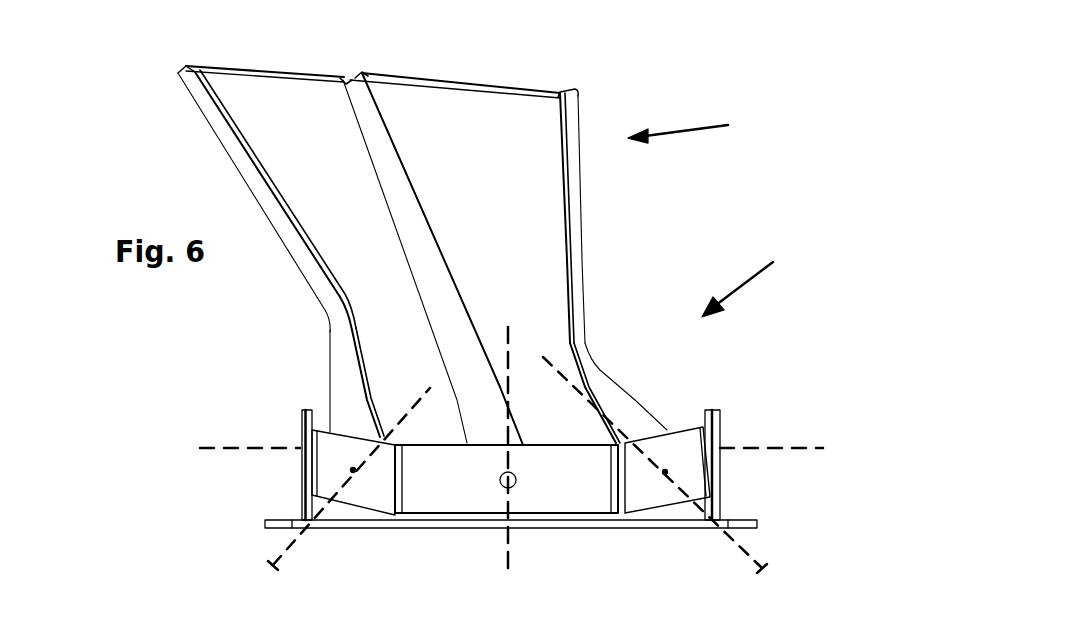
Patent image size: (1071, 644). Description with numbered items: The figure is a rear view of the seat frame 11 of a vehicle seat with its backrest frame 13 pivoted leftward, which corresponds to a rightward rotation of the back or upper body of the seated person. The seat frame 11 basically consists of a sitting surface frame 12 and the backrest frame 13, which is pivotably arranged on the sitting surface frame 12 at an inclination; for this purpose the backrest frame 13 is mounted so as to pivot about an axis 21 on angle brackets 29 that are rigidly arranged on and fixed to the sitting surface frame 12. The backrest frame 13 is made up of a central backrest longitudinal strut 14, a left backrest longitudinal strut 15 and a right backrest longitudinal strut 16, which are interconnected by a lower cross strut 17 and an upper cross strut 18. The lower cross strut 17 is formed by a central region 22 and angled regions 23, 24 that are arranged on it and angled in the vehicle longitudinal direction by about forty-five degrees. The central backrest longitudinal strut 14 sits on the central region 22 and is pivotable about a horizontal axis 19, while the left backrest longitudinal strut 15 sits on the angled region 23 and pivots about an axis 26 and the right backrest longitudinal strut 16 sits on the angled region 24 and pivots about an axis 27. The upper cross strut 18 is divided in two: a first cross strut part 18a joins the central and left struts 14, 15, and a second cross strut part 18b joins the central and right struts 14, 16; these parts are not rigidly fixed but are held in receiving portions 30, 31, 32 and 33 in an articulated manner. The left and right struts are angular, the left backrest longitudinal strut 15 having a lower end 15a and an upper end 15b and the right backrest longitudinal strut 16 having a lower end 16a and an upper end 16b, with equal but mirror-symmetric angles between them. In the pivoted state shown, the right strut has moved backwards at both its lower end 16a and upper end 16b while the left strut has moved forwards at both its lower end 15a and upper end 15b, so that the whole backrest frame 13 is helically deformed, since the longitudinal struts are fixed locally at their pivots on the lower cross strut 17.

The seat frame 11 is at (749, 283).
The sitting surface frame 12 is at (453, 525).
The backrest frame 13 is at (692, 126).
The central backrest longitudinal strut 14 is at (410, 210).
The left backrest longitudinal strut 15 is at (244, 253).
The lower end of left backrest longitudinal strut 15a is at (337, 363).
The upper end of left backrest longitudinal strut 15b is at (198, 103).
The right backrest longitudinal strut 16 is at (635, 268).
The lower end of right backrest longitudinal strut 16a is at (613, 393).
The upper end of right backrest longitudinal strut 16b is at (577, 204).
The lower cross strut 17 is at (561, 510).
The upper cross strut 18 is at (373, 61).
The first cross strut part 18a is at (257, 70).
The second cross strut part 18b is at (462, 82).
The horizontal axis 19 is at (508, 562).
The axis 21 is at (235, 448).
The central region of lower cross strut 22 is at (583, 505).
The angled region of lower cross strut 23 is at (375, 492).
The angled region of lower cross strut 24 is at (692, 468).
The axis 26 is at (272, 563).
The axis 27 is at (762, 565).
The angle brackets 29 is at (305, 423).
The receiving portion 30 is at (188, 66).
The receiving portion 31 is at (345, 80).
The receiving portion 32 is at (362, 72).
The receiving portion 33 is at (560, 93).